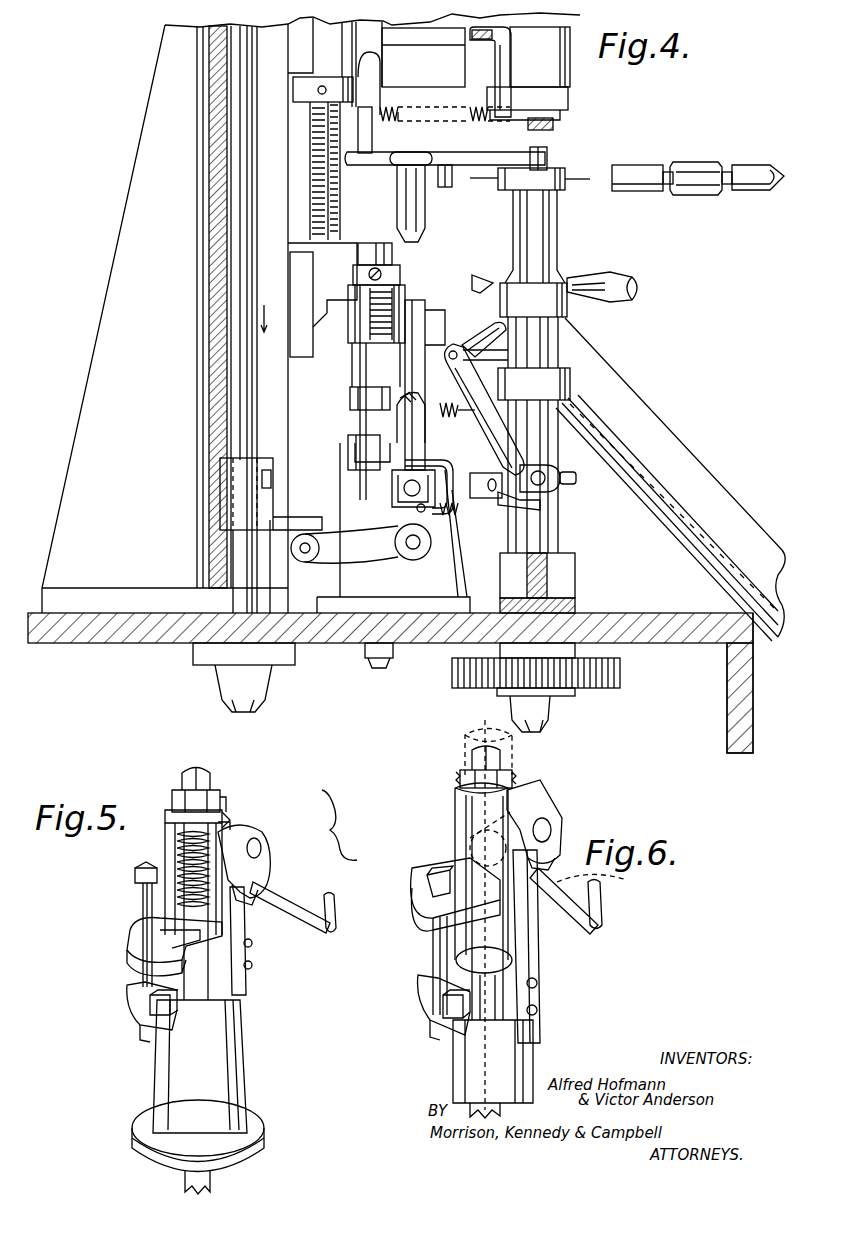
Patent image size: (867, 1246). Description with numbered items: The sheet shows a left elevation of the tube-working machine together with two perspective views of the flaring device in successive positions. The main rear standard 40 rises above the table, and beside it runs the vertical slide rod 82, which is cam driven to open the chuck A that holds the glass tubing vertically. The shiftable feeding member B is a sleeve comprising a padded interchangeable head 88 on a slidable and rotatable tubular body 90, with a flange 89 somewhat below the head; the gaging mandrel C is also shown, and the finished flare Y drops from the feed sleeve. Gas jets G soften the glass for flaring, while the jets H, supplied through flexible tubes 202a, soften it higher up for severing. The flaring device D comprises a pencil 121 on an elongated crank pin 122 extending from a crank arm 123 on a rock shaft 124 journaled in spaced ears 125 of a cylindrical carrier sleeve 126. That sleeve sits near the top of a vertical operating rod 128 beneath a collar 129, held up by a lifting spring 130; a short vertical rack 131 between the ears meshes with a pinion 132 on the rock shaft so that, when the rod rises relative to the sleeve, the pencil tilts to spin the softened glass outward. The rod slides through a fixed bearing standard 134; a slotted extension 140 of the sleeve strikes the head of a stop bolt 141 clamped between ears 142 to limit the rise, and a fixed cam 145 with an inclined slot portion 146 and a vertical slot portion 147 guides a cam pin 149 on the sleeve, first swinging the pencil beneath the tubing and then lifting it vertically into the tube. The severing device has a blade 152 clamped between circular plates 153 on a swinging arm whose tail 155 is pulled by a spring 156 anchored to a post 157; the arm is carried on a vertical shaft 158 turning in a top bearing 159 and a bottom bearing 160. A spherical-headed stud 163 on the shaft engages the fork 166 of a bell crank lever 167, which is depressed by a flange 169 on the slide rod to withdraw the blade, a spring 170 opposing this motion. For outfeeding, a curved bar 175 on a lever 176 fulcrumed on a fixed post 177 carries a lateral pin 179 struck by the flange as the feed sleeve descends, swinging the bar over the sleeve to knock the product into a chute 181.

In FIG. 4, the main or rear standard 40 is at (160, 395).
In FIG. 4, the vertical slide rod 82 is at (235, 420).
In FIG. 4, the interchangeable head 88 is at (570, 313).
In FIG. 4, the flange 89 is at (572, 385).
In FIG. 4, the tubular body 90 is at (560, 522).
In FIG. 5, the finger or pencil 121 is at (332, 896).
In FIG. 6, the finger or pencil 121 is at (600, 886).
In FIG. 5, the crank pin 122 is at (330, 932).
In FIG. 6, the crank pin 122 is at (605, 925).
In FIG. 5, the crank arm 123 is at (265, 868).
In FIG. 6, the crank arm 123 is at (562, 838).
In FIG. 5, the rock shaft 124 is at (260, 847).
In FIG. 6, the rock shaft 124 is at (546, 826).
In FIG. 5, the spaced ears 125 is at (248, 822).
In FIG. 4, the cylindrical sleeve or block 126 is at (378, 366).
In FIG. 5, the cylindrical sleeve or block 126 is at (166, 840).
In FIG. 6, the cylindrical sleeve or block 126 is at (457, 822).
In FIG. 4, the vertical operating rod 128 is at (392, 255).
In FIG. 5, the vertical operating rod 128 is at (192, 770).
In FIG. 6, the vertical operating rod 128 is at (492, 938).
In FIG. 4, the collar 129 is at (402, 276).
In FIG. 5, the collar 129 is at (178, 792).
In FIG. 6, the collar 129 is at (462, 772).
In FIG. 5, the lifting spring 130 is at (165, 858).
In FIG. 5, the short vertical rack 131 is at (222, 806).
In FIG. 6, the short vertical rack 131 is at (516, 744).
In FIG. 4, the pinion 132 is at (400, 290).
In FIG. 5, the pinion 132 is at (226, 816).
In FIG. 4, the fixed bearing standard 134 is at (530, 150).
In FIG. 5, the fixed bearing standard 134 is at (240, 1057).
In FIG. 6, the fixed bearing standard 134 is at (527, 1044).
In FIG. 5, the slotted extension 140 is at (130, 937).
In FIG. 6, the slotted extension 140 is at (420, 900).
In FIG. 5, the stop bolt 141 is at (140, 892).
In FIG. 6, the stop bolt 141 is at (438, 944).
In FIG. 5, the ears 142 is at (130, 987).
In FIG. 6, the ears 142 is at (420, 992).
In FIG. 6, the fixed cam 145 is at (538, 962).
In FIG. 5, the inclined slot portion 146 is at (254, 943).
In FIG. 5, the vertical slot portion 147 is at (246, 915).
In FIG. 5, the cam pin 149 is at (254, 968).
In FIG. 4, the severing blade 152 is at (588, 179).
In FIG. 4, the circular plates 153 is at (532, 172).
In FIG. 4, the tail 155 is at (368, 160).
In FIG. 4, the spring 156 is at (489, 125).
In FIG. 4, the post 157 is at (511, 62).
In FIG. 4, the vertical shaft 158 is at (426, 205).
In FIG. 4, the top bearing 159 is at (390, 115).
In FIG. 4, the bottom bearing 160 is at (393, 528).
In FIG. 4, the stud 163 is at (404, 489).
In FIG. 4, the fork 166 is at (417, 510).
In FIG. 4, the bell crank lever 167 is at (361, 545).
In FIG. 4, the flange or projection 169 is at (295, 520).
In FIG. 4, the spring 170 is at (456, 505).
In FIG. 4, the curved bar 175 is at (482, 333).
In FIG. 4, the lever 176 is at (520, 452).
In FIG. 4, the fixed post 177 is at (490, 545).
In FIG. 4, the lateral pin 179 is at (570, 484).
In FIG. 4, the chute 181 is at (670, 479).
In FIG. 4, the flexible tubes 202a is at (762, 190).
In FIG. 4, the rotary chuck A is at (570, 103).
In FIG. 4, the shiftable feeding member B is at (560, 343).
In FIG. 4, the gaging mandrel C is at (541, 223).
In FIG. 5, the flaring tool or pencil D is at (346, 825).
In FIG. 4, the gas jets or nozzles G is at (606, 275).
In FIG. 4, the jets H is at (650, 213).
In FIG. 4, the flare Y is at (513, 236).